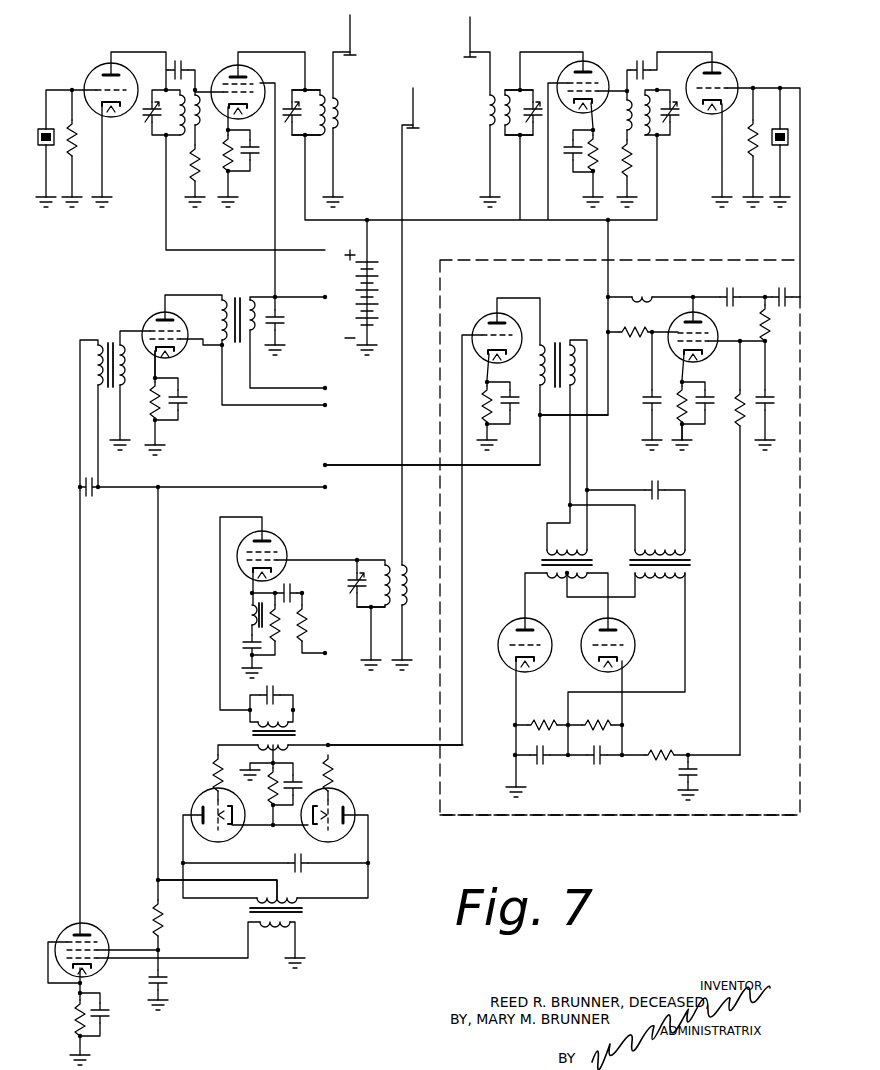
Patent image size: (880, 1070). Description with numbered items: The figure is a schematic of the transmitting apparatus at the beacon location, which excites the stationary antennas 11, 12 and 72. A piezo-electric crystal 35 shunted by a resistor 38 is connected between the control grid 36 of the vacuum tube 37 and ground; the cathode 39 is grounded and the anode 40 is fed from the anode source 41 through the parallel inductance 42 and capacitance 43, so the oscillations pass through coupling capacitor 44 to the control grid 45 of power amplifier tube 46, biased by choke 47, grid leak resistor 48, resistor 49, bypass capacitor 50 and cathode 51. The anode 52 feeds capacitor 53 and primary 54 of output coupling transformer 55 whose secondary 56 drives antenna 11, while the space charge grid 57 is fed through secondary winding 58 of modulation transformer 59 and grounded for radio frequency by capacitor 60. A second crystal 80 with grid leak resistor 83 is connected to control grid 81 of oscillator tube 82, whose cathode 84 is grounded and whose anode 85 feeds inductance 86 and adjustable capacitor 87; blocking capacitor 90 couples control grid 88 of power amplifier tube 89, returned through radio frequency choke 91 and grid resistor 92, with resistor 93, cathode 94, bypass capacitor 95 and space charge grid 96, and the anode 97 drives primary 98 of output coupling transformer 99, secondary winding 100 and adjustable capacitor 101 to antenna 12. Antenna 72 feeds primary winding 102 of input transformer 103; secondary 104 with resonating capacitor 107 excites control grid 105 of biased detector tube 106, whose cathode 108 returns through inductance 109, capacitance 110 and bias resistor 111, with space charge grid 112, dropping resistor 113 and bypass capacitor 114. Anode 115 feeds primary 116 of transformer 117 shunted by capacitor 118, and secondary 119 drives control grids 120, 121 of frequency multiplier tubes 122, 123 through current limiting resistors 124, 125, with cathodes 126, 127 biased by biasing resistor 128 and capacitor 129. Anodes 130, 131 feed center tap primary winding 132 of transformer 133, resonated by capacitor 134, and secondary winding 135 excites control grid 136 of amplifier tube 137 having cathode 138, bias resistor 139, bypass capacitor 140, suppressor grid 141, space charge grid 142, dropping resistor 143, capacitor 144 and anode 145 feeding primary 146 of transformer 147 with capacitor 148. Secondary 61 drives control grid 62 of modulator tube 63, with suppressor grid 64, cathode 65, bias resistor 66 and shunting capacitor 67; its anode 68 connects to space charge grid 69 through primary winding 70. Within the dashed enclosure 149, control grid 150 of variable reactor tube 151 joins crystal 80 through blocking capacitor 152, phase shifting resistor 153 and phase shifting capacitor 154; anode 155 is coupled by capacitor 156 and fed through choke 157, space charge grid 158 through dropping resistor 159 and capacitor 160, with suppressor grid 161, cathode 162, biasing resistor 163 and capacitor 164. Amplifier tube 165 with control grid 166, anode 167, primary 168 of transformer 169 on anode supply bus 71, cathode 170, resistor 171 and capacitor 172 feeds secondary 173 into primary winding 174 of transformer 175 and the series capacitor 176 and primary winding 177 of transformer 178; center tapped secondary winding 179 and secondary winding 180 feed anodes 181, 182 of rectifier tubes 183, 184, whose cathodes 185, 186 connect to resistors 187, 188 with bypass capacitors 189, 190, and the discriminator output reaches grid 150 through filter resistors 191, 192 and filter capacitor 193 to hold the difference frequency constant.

The antenna 11 is at (348, 36).
The antenna 12 is at (472, 40).
The antenna 72 is at (412, 106).
The piezo-electric crystal 35 is at (42, 147).
The control grid 36 is at (125, 85).
The vacuum tube 37 is at (86, 82).
The resistor 38 is at (76, 145).
The cathode 39 is at (108, 110).
The anode 40 is at (108, 62).
The anode source 41 is at (355, 285).
The inductance 42 is at (180, 133).
The capacitance 43 is at (150, 122).
The coupling capacitor 44 is at (184, 62).
The control grid 45 is at (248, 98).
The power amplifier tube 46 is at (228, 70).
The choke 47 is at (198, 120).
The grid leak resistor 48 is at (192, 168).
The resistor 49 is at (226, 162).
The bypass capacitor 50 is at (252, 160).
The cathode 51 is at (228, 106).
The anode 52 is at (243, 74).
The capacitor 53 is at (292, 124).
The primary 54 is at (313, 124).
The output coupling transformer 55 is at (306, 102).
The secondary 56 is at (334, 128).
The space charge grid 57 is at (256, 84).
The secondary winding 58 is at (251, 352).
The modulation transformer 59 is at (234, 309).
The capacitor 60 is at (280, 320).
The secondary 61 is at (124, 365).
The control grid 62 is at (180, 352).
The modulator tube 63 is at (147, 318).
The suppressor grid 64 is at (178, 324).
The cathode 65 is at (172, 368).
The bias resistor 66 is at (153, 410).
The shunting capacitor 67 is at (184, 405).
The anode 68 is at (163, 308).
The space charge grid 69 is at (186, 343).
The primary winding 70 is at (224, 352).
The anode supply bus 71 is at (492, 468).
The piezo-electric crystal 80 is at (780, 147).
The control grid 81 is at (728, 87).
The oscillator tube 82 is at (698, 76).
The grid leak resistor 83 is at (754, 150).
The cathode 84 is at (710, 105).
The anode 85 is at (722, 72).
The inductance 86 is at (646, 136).
The adjustable capacitor 87 is at (671, 124).
The control grid 88 is at (605, 95).
The power amplifier tube 89 is at (562, 70).
The blocking capacitor 90 is at (640, 60).
The radio frequency choke 91 is at (629, 128).
The grid resistor 92 is at (631, 160).
The resistor 93 is at (597, 160).
The cathode 94 is at (574, 106).
The bypass capacitor 95 is at (571, 152).
The space charge grid 96 is at (600, 82).
The anode 97 is at (588, 68).
The primary 98 is at (515, 125).
The output coupling transformer 99 is at (515, 102).
The secondary winding 100 is at (489, 121).
The adjustable capacitor 101 is at (536, 124).
The primary winding 102 is at (400, 592).
The input transformer 103 is at (382, 571).
The secondary 104 is at (378, 610).
The control grid 105 is at (282, 554).
The biased detector tube 106 is at (250, 538).
The resonating capacitor 107 is at (355, 592).
The cathode 108 is at (252, 585).
The inductance 109 is at (242, 615).
The capacitance 110 is at (250, 648).
The bias resistor 111 is at (275, 645).
The space charge grid 112 is at (282, 544).
The dropping resistor 113 is at (310, 636).
The bypass capacitor 114 is at (292, 584).
The anode 115 is at (268, 530).
The primary 116 is at (290, 724).
The transformer 117 is at (258, 735).
The capacitor 118 is at (282, 696).
The secondary 119 is at (292, 746).
The control grid 120 is at (332, 836).
The control grid 121 is at (218, 840).
The frequency multiplier tube 122 is at (347, 806).
The frequency multiplier tube 123 is at (196, 803).
The current limiting resistor 124 is at (332, 768).
The current limiting resistor 125 is at (201, 773).
The cathode 126 is at (296, 858).
The cathode 127 is at (240, 836).
The biasing resistor 128 is at (268, 783).
The capacitor 129 is at (296, 776).
The anode 130 is at (360, 826).
The anode 131 is at (200, 838).
The center tap primary winding 132 is at (300, 904).
The transformer 133 is at (261, 912).
The capacitor 134 is at (302, 867).
The secondary winding 135 is at (298, 928).
The control grid 136 is at (101, 959).
The amplifier tube 137 is at (63, 931).
The cathode 138 is at (96, 972).
The bias resistor 139 is at (72, 1022).
The bypass capacitor 140 is at (109, 1018).
The suppressor grid 141 is at (97, 938).
The space charge grid 142 is at (104, 948).
The dropping resistor 143 is at (166, 928).
The capacitor 144 is at (170, 980).
The anode 145 is at (86, 928).
The primary 146 is at (78, 342).
The transformer 147 is at (114, 351).
The capacitor 148 is at (88, 494).
The dashed enclosure 149 is at (520, 815).
The control grid 150 is at (697, 358).
The variable reactor tube 151 is at (676, 322).
The blocking capacitor 152 is at (784, 290).
The phase shifting resistor 153 is at (771, 320).
The phase shifting capacitor 154 is at (770, 400).
The anode 155 is at (708, 322).
The capacitor 156 is at (732, 282).
The choke 157 is at (652, 282).
The space charge grid 158 is at (706, 346).
The dropping resistor 159 is at (635, 328).
The capacitor 160 is at (650, 410).
The suppressor grid 161 is at (716, 335).
The cathode 162 is at (680, 360).
The biasing resistor 163 is at (686, 432).
The capacitor 164 is at (710, 415).
The amplifier tube 165 is at (483, 328).
The control grid 166 is at (507, 326).
The anode 167 is at (495, 310).
The primary 168 is at (535, 358).
The transformer 169 is at (562, 349).
The cathode 170 is at (486, 360).
The resistor 171 is at (493, 428).
The capacitor 172 is at (514, 410).
The secondary 173 is at (578, 368).
The primary winding 174 is at (592, 542).
The transformer 175 is at (553, 564).
The capacitor 176 is at (658, 489).
The primary winding 177 is at (670, 542).
The transformer 178 is at (677, 564).
The center tapped secondary winding 179 is at (560, 580).
The secondary winding 180 is at (660, 580).
The anode 181 is at (508, 643).
The anode 182 is at (622, 630).
The rectifier tube 183 is at (515, 620).
The rectifier tube 184 is at (598, 622).
The cathode 185 is at (510, 656).
The cathode 186 is at (622, 656).
The resistor 187 is at (548, 720).
The resistor 188 is at (604, 720).
The bypass capacitor 189 is at (542, 763).
The bypass capacitor 190 is at (600, 763).
The filter resistor 191 is at (670, 745).
The filter resistor 192 is at (742, 380).
The filter capacitor 193 is at (694, 772).